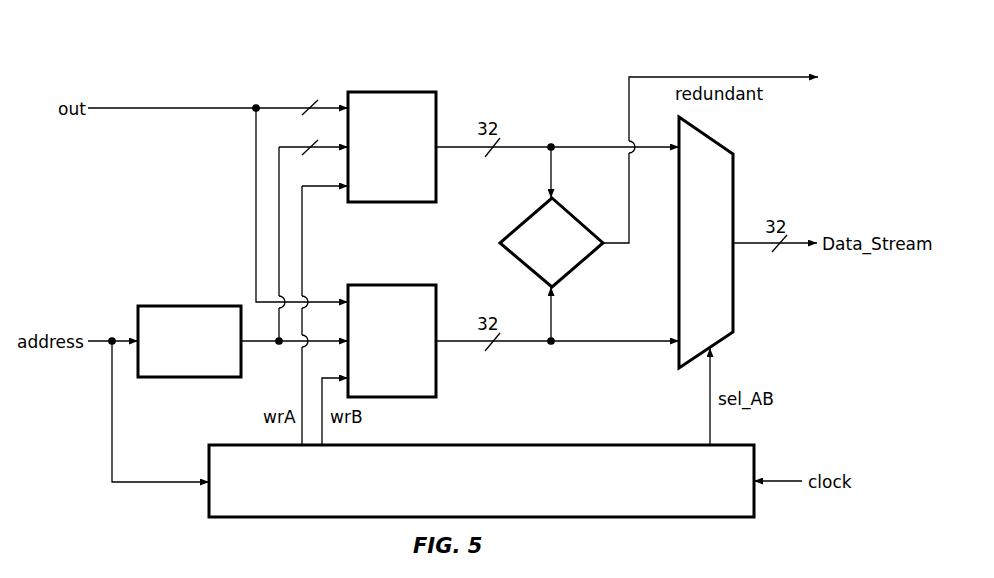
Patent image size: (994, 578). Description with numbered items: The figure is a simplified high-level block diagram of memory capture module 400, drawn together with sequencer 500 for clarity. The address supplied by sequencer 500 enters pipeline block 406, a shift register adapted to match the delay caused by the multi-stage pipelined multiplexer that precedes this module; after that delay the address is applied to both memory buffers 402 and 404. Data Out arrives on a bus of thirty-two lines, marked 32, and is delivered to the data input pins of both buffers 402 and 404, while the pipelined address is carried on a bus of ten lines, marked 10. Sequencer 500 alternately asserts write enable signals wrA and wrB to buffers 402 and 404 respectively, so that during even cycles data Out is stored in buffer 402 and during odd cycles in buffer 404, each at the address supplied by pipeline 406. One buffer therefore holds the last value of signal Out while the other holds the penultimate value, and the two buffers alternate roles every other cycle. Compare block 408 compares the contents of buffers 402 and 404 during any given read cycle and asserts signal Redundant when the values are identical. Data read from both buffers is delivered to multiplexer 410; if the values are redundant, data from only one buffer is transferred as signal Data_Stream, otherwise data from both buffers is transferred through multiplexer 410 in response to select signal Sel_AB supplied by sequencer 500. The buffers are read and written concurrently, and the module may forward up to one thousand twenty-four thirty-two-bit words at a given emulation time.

The memory capture module 400 is at (797, 44).
The memory buffer 402 is at (376, 168).
The memory buffer 404 is at (376, 361).
The pipeline block 406 is at (174, 355).
The compare block 408 is at (524, 224).
The multiplexer 410 is at (690, 250).
The sequencer 500 is at (465, 501).
The 32-bit bus 32 is at (308, 98).
The 10-bit bus 10 is at (313, 137).